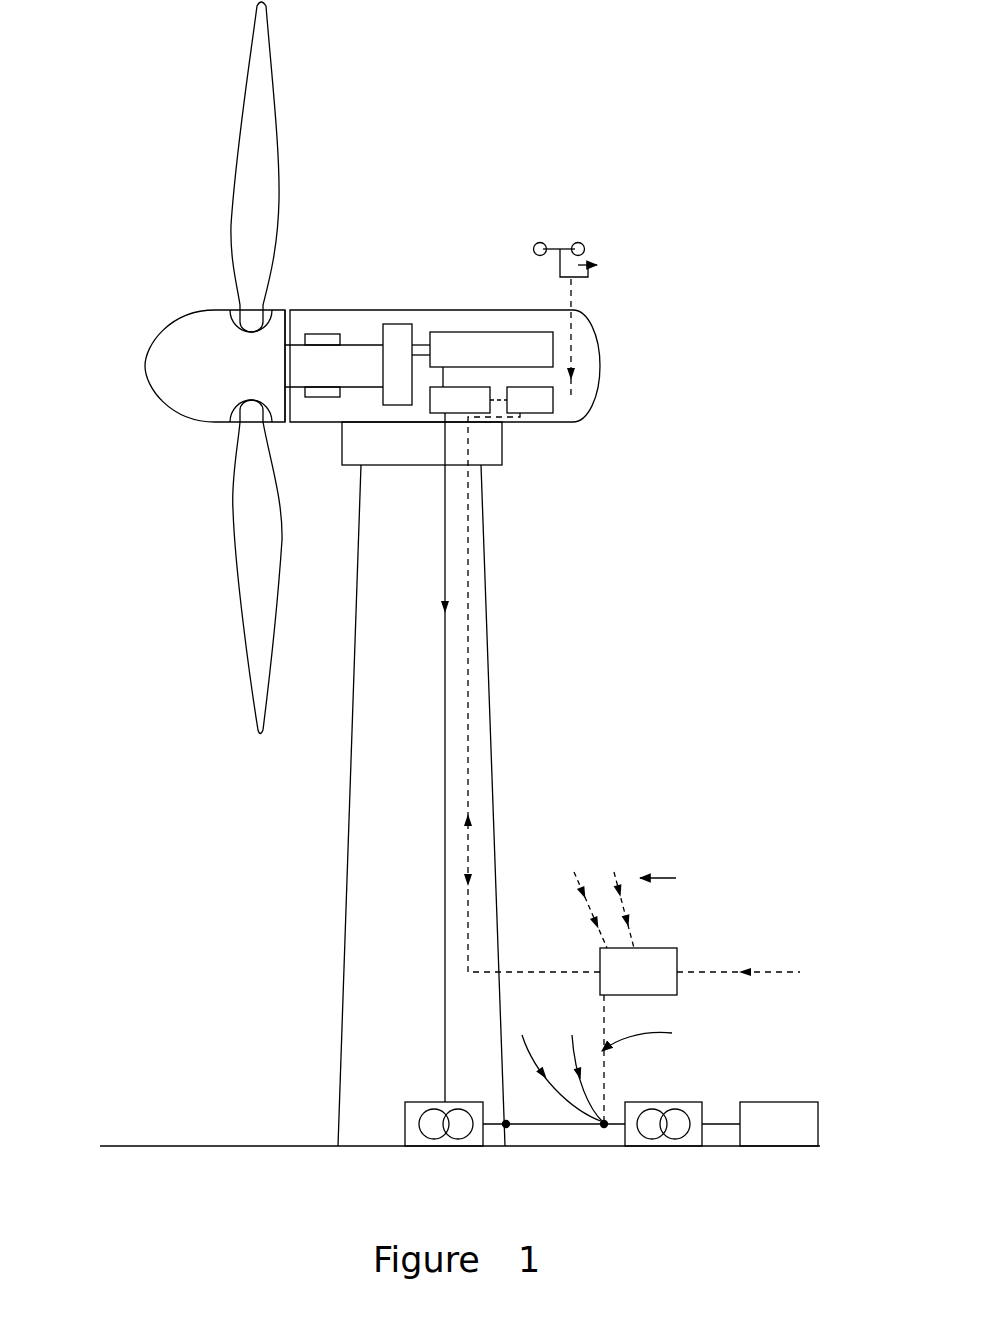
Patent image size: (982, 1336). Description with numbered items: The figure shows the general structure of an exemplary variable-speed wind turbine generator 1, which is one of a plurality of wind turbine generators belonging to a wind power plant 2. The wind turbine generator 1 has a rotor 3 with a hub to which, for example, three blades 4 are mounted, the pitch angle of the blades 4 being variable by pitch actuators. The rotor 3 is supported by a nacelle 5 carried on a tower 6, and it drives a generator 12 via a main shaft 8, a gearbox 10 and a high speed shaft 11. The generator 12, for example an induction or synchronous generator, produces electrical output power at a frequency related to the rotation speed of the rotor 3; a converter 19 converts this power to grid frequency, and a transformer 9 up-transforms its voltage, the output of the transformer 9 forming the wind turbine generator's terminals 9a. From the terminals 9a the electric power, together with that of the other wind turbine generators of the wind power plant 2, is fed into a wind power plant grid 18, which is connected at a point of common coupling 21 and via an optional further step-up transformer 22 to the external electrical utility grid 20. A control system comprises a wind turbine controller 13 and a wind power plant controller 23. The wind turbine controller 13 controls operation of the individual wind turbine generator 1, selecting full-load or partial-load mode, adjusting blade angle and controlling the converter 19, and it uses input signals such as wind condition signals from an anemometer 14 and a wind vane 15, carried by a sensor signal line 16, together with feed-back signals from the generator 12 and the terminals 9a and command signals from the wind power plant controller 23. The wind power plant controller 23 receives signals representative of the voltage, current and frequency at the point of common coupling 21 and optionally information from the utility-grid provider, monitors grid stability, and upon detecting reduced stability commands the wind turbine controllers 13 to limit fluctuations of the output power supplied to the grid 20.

The wind turbine generator 1 is at (435, 146).
The wind power plant 2 is at (146, 193).
The rotor 3 is at (148, 373).
The blades 4 is at (276, 118).
The nacelle 5 is at (322, 310).
The tower 6 is at (346, 897).
The main shaft 8 is at (356, 345).
The transformer 9 is at (413, 1102).
The terminals 9a is at (506, 1128).
The gearbox 10 is at (393, 324).
The high speed shaft 11 is at (420, 343).
The generator 12 is at (488, 332).
The wind turbine controller 13 is at (553, 413).
The anemometer 14 is at (578, 243).
The wind vane 15 is at (603, 256).
The sensor signal line 16 is at (572, 338).
The wind power plant grid 18 is at (560, 1127).
The converter 19 is at (430, 413).
The utility grid 20 is at (792, 1146).
The point of common coupling 21 is at (604, 1128).
The step-up transformer 22 is at (692, 1142).
The wind power plant controller 23 is at (665, 948).